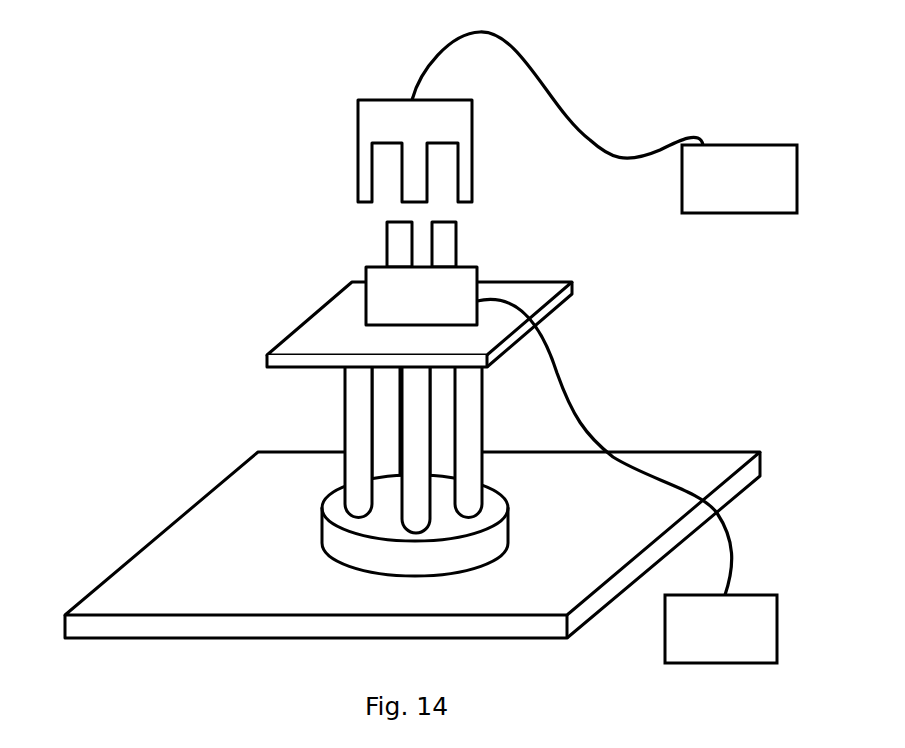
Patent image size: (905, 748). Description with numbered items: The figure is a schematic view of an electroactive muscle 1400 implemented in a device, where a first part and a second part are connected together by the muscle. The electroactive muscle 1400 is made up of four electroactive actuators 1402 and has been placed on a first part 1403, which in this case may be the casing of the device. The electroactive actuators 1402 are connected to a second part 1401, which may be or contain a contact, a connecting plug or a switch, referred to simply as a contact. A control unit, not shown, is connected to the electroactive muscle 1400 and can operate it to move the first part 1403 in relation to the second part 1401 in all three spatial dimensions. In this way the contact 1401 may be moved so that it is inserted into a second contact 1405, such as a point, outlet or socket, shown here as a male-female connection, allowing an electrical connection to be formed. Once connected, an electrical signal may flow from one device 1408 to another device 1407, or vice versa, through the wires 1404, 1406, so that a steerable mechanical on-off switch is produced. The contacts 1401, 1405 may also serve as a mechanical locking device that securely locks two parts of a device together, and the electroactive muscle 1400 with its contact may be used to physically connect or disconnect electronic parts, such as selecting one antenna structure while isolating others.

The electroactive muscle 1400 is at (170, 289).
The second part 1401 is at (352, 305).
The electroactive actuators 1402 is at (358, 415).
The first part 1403 is at (205, 547).
The wire 1404 is at (590, 434).
The second contact 1405 is at (358, 106).
The wire 1406 is at (570, 137).
The device 1407 is at (768, 193).
The device 1408 is at (750, 643).